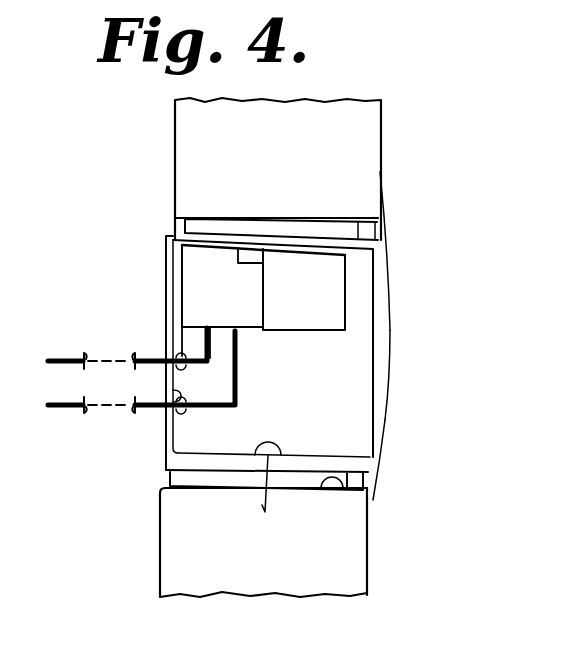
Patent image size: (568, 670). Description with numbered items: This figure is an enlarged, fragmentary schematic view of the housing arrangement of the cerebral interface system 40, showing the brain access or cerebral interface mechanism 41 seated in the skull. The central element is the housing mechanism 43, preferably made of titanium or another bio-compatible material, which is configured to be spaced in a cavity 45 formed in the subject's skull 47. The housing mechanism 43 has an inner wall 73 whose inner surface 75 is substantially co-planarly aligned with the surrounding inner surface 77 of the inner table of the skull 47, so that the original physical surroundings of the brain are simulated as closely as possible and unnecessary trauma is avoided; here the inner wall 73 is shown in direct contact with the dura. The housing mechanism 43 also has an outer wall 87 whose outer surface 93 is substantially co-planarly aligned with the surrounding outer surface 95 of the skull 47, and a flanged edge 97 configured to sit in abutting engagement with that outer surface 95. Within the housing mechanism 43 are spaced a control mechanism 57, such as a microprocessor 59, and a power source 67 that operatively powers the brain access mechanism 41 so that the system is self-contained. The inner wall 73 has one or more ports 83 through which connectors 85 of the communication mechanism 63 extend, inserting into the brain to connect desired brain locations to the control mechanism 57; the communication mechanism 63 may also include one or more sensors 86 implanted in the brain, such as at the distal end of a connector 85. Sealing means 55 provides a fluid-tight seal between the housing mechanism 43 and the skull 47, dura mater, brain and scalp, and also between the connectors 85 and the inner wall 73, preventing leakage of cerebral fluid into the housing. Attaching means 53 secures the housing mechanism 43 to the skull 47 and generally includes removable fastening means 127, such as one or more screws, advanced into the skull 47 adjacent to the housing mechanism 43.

The cerebral interface system 40 is at (397, 118).
The cerebral interface mechanism 41 is at (414, 319).
The housing mechanism 43 is at (221, 460).
The cavity 45 is at (333, 484).
The skull 47 is at (357, 591).
The attaching means 53 is at (283, 448).
The sealing means 55 is at (180, 414).
The control mechanism 57 is at (222, 302).
The microprocessor 59 is at (255, 250).
The communication mechanism 63 is at (103, 353).
The power source 67 is at (310, 302).
The inner wall 73 is at (167, 284).
The inner surface 75 is at (167, 245).
The surrounding inner surface 77 is at (175, 154).
The port 83 is at (165, 447).
The connectors 85 is at (146, 366).
The sensors 86 is at (48, 357).
The outer wall 87 is at (380, 368).
The outer surface 93 is at (387, 423).
The surrounding outer surface 95 is at (372, 547).
The flanged edge 97 is at (388, 230).
The removable fastening means 127 is at (263, 445).